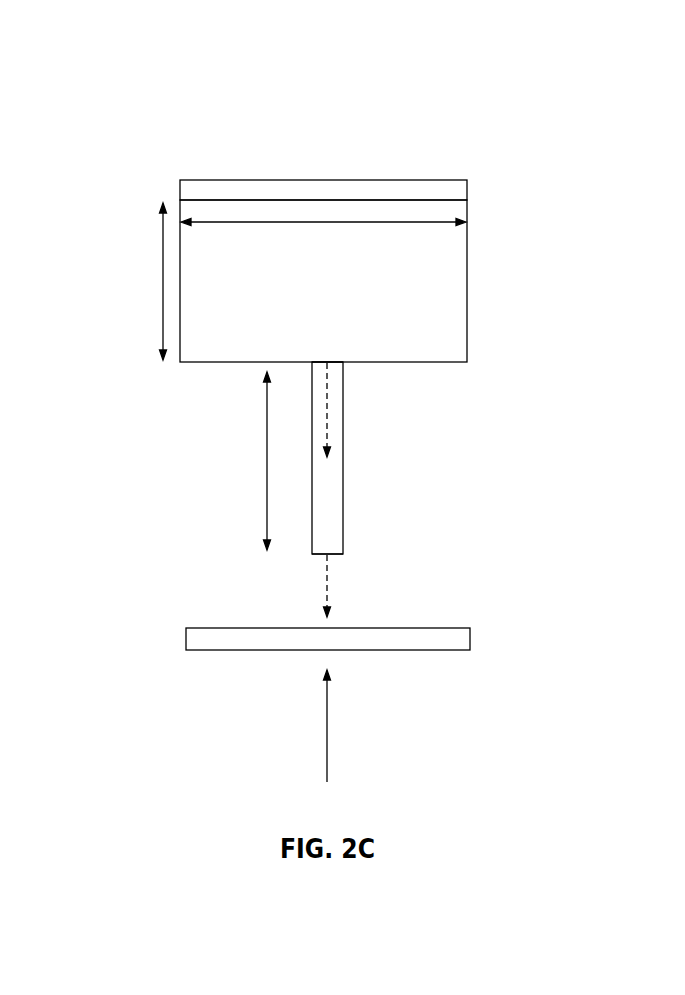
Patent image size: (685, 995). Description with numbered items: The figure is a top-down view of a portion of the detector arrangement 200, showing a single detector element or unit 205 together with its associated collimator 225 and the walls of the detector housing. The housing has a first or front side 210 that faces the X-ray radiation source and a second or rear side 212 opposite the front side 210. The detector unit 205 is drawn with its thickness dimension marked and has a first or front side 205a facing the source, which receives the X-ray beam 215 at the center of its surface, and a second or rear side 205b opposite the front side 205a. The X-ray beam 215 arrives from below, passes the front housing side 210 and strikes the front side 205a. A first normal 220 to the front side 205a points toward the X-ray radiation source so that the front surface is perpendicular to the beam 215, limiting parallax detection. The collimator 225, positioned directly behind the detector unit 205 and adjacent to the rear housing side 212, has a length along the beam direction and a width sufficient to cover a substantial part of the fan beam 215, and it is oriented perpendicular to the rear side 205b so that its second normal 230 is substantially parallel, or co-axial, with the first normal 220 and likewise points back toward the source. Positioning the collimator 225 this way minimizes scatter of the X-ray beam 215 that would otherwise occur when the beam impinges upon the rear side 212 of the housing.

The detector arrangement 200 is at (342, 63).
The second or rear side of the housing 212 is at (443, 180).
The collimator 225 is at (198, 362).
The detector element or unit 205 is at (332, 498).
The second side or rear side of detector unit 205b is at (340, 356).
The first side or front side of detector unit 205a is at (309, 558).
The second normal 230 is at (328, 418).
The first normal 220 is at (328, 588).
The first or front side of the housing 210 is at (186, 640).
The X-ray beam 215 is at (327, 723).